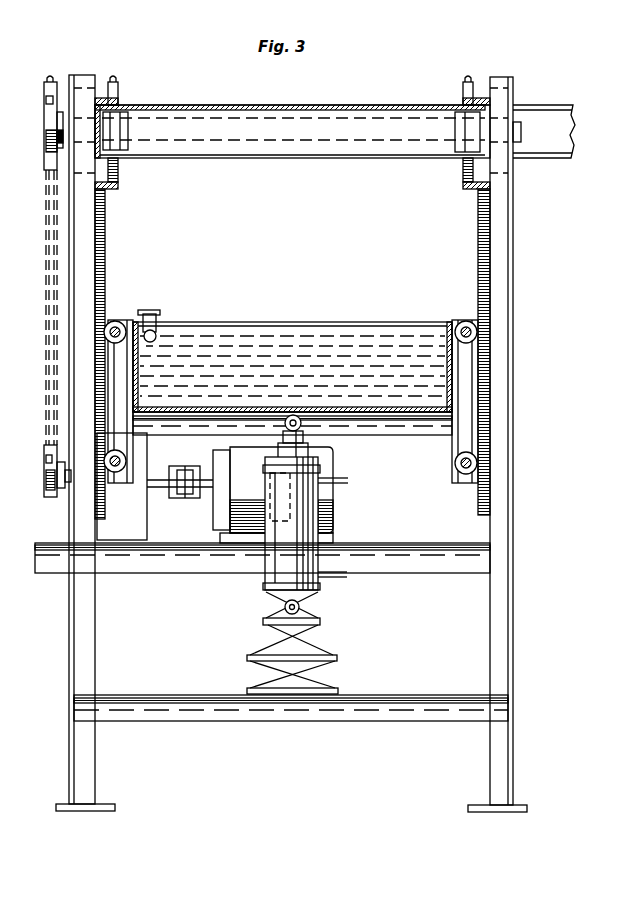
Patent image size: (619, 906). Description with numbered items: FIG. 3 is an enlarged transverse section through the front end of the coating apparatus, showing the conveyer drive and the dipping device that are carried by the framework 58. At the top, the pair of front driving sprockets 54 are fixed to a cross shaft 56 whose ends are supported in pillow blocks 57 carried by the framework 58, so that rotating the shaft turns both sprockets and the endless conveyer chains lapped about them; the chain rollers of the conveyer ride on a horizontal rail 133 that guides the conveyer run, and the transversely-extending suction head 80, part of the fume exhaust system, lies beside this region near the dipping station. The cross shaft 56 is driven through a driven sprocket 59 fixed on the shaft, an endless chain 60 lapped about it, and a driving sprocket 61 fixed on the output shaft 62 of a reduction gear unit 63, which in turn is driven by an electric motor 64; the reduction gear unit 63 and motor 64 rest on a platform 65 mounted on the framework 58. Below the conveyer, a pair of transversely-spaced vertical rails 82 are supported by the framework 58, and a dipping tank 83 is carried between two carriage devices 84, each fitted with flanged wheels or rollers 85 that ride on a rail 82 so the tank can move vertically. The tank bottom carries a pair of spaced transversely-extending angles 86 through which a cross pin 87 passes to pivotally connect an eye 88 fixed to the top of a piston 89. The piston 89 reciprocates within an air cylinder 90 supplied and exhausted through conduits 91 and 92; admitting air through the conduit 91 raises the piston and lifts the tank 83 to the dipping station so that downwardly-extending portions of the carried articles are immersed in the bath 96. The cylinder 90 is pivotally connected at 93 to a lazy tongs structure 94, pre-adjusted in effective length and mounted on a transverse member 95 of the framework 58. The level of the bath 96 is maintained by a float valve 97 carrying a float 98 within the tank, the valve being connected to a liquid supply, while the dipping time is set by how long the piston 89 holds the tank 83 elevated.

The front driving sprocket 54 is at (121, 88).
The cross shaft 56 is at (520, 122).
The pillow block 57 is at (513, 180).
The framework 58 is at (519, 389).
The driven sprocket 59 is at (46, 150).
The endless chain 60 is at (47, 318).
The driving sprocket 61 is at (45, 486).
The output shaft 62 is at (62, 490).
The reduction gear unit 63 is at (146, 521).
The electric motor 64 is at (218, 514).
The platform 65 is at (428, 543).
The suction head 80 is at (573, 118).
The vertical rail 82 is at (106, 275).
The dipping tank 83 is at (449, 320).
The carriage device 84 is at (133, 456).
The flanged wheel or roller 85 is at (118, 321).
The angle 86 is at (385, 433).
The cross pin 87 is at (352, 425).
The eye 88 is at (285, 424).
The piston 89 is at (306, 448).
The air cylinder 90 is at (319, 531).
The conduit 91 is at (345, 578).
The conduit 92 is at (345, 484).
The pivotal connection 93 is at (300, 607).
The lazy tongs structure 94 is at (325, 650).
The transverse member 95 is at (437, 696).
The bath 96 is at (315, 340).
The float valve 97 is at (153, 314).
The float 98 is at (158, 335).
The rail 133 is at (170, 97).